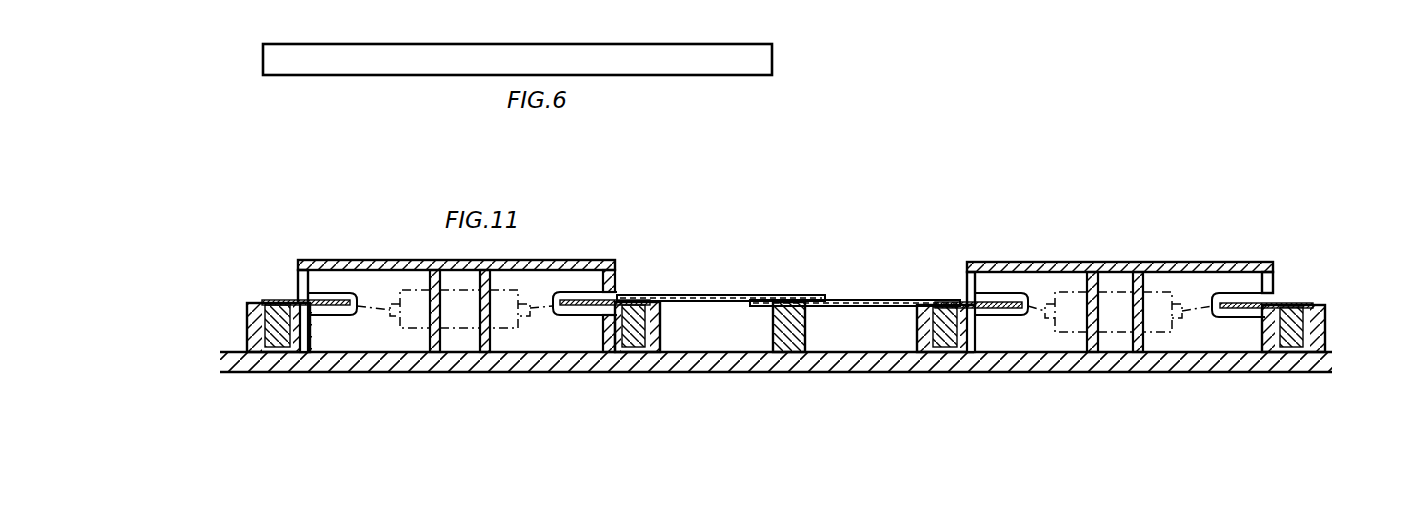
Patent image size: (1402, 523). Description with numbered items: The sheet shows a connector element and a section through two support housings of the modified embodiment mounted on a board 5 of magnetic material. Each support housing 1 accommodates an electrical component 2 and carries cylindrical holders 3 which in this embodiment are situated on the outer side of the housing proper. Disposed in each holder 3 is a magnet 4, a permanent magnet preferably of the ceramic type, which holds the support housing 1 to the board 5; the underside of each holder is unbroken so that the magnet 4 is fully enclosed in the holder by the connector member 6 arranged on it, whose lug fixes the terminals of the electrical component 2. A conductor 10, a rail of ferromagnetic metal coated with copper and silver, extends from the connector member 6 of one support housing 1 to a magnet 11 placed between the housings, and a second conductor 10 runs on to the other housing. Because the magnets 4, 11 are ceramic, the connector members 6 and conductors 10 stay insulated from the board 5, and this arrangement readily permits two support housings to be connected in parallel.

In FIG. 11, the support housing 1 is at (398, 259).
In FIG. 11, the electrical component 2 is at (527, 258).
In FIG. 11, the cylindrical holder 3 is at (333, 334).
In FIG. 11, the magnet 4 is at (276, 330).
In FIG. 11, the board 5 is at (517, 364).
In FIG. 11, the connector member 6 is at (280, 300).
In FIG. 6, the conductor 10 is at (750, 76).
In FIG. 11, the conductor 10 is at (702, 294).
In FIG. 11, the magnet 11 is at (792, 353).